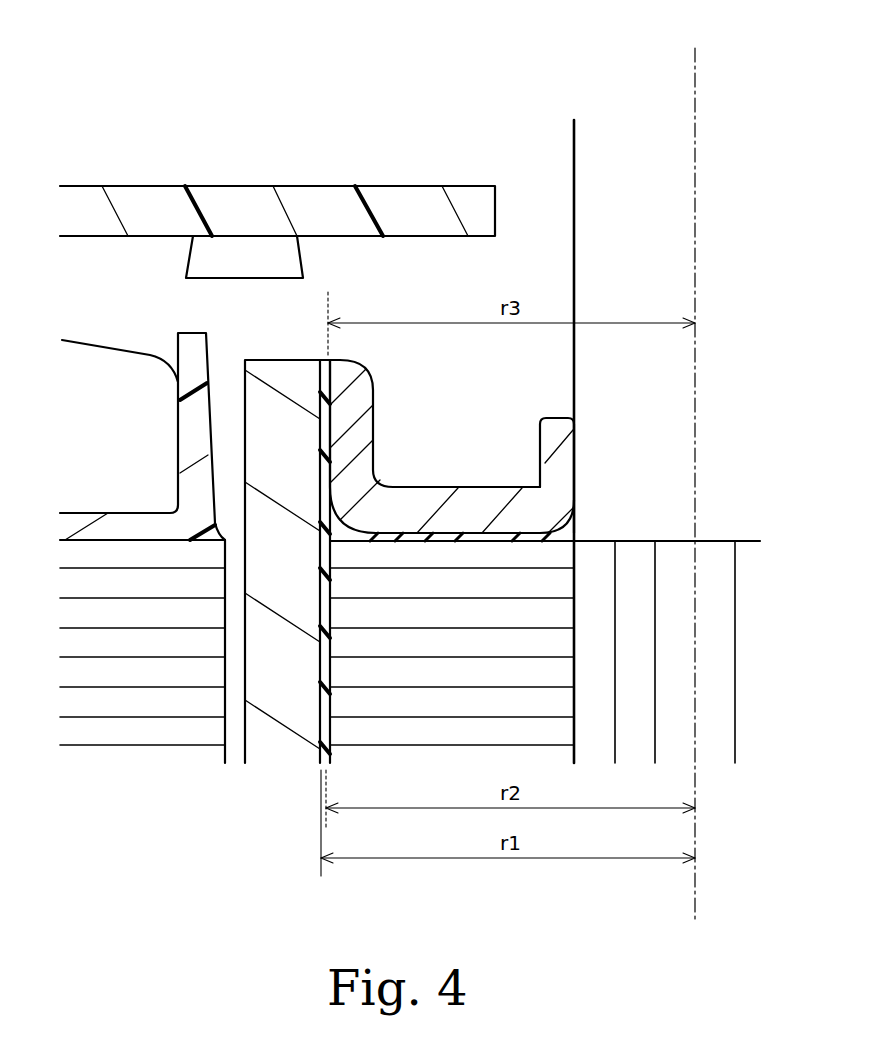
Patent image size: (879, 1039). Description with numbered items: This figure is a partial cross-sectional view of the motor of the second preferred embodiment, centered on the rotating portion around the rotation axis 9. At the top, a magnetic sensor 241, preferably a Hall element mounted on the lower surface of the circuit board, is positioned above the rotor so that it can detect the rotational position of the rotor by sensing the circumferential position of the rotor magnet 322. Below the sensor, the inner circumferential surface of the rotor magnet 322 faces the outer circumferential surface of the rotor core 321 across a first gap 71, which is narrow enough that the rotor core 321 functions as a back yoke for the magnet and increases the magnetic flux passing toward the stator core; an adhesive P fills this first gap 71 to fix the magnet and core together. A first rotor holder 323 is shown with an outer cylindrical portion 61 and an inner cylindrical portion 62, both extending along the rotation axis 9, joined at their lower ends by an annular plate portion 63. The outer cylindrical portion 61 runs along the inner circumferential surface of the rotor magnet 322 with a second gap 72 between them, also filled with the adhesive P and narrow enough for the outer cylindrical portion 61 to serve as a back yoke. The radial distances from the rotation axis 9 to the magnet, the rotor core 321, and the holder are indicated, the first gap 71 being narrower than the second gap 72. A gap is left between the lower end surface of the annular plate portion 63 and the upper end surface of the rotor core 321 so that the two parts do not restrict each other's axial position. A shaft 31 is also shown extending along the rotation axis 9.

The magnetic sensor 241 is at (245, 260).
The shaft 31 is at (595, 158).
The rotation axis 9 is at (697, 90).
The second gap 72 is at (318, 396).
The first gap 71 is at (317, 703).
The outer cylindrical portion 61 is at (352, 418).
The inner cylindrical portion 62 is at (550, 440).
The annular plate portion 63 is at (476, 507).
The adhesive P is at (318, 530).
The first rotor holder 323 is at (584, 474).
The rotor core 321 is at (525, 672).
The rotor magnet 322 is at (273, 685).